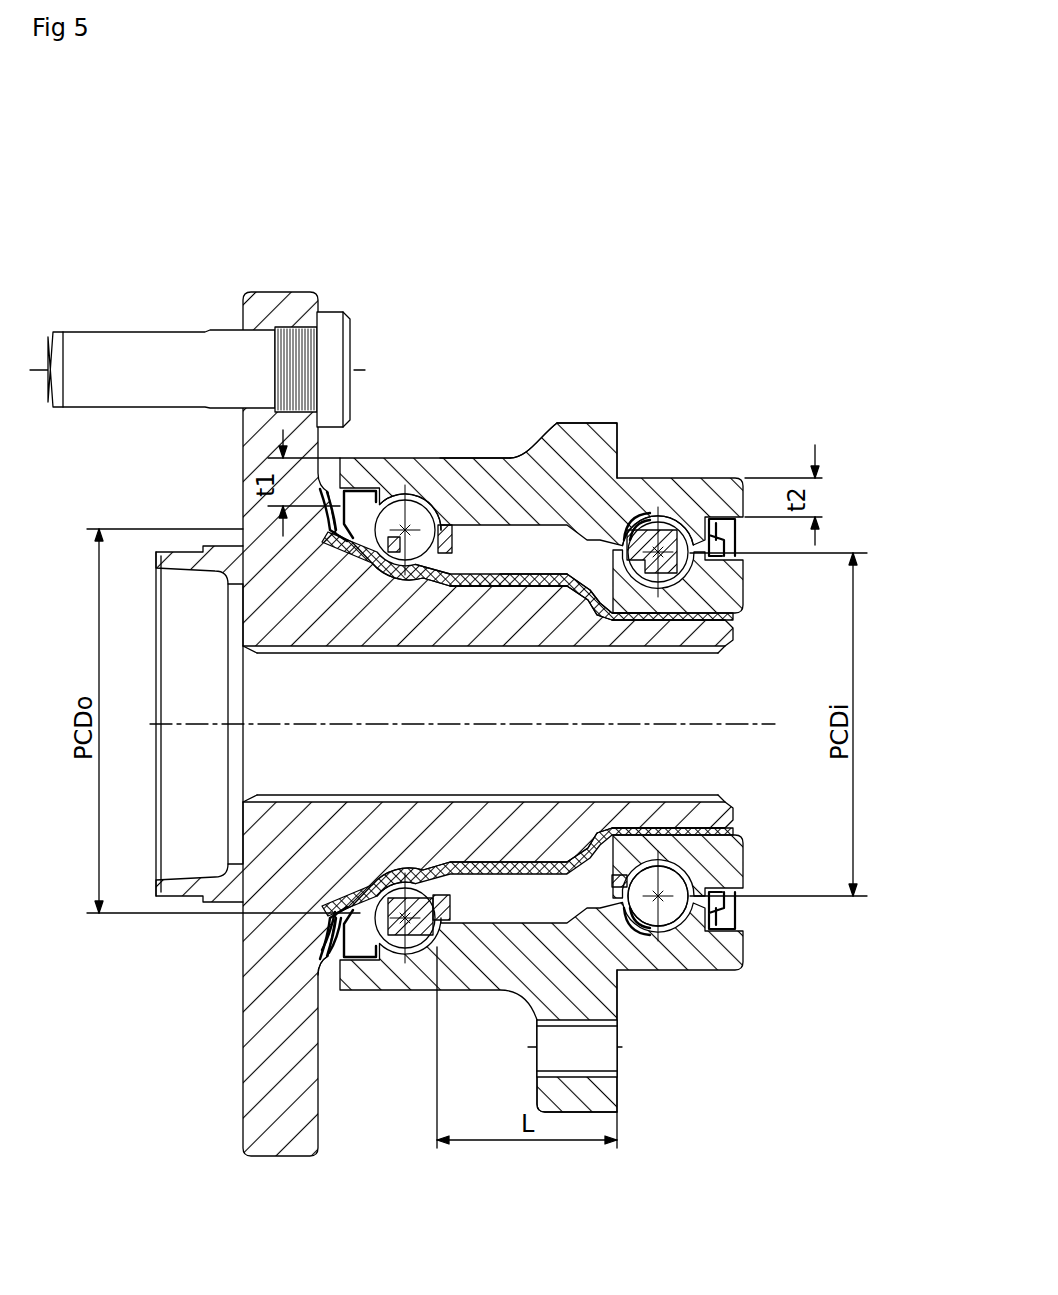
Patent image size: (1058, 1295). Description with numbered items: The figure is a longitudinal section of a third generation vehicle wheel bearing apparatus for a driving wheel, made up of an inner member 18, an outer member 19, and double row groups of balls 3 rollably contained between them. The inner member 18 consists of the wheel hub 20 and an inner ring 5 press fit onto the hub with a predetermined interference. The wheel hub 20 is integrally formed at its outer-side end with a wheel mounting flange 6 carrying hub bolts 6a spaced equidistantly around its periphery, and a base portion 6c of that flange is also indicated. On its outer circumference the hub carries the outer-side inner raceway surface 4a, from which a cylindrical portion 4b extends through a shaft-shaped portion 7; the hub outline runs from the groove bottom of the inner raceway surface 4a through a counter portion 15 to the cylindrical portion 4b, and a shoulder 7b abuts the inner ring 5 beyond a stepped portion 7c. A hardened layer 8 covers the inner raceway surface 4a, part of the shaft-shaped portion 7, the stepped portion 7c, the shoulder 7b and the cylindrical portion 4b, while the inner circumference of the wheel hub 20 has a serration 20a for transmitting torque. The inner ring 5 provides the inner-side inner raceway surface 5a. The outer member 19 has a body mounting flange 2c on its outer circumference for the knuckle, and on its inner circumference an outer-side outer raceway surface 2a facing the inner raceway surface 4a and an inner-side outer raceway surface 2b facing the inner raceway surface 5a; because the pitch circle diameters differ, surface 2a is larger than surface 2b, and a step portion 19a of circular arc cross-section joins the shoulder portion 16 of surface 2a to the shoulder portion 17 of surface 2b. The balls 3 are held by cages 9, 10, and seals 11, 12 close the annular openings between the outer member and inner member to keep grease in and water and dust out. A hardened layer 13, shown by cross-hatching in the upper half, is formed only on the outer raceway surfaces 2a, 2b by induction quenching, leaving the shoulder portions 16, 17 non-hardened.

The outer-side outer raceway surface 2a is at (398, 505).
The inner-side outer raceway surface 2b is at (665, 545).
The body mounting flange 2c is at (542, 1097).
The balls 3 is at (382, 935).
The inner raceway surface 4a is at (392, 895).
The cylindrical portion 4b is at (676, 628).
The inner ring 5 is at (722, 583).
The inner raceway surface 5a is at (738, 539).
The wheel mounting flange 6 is at (272, 297).
The hub bolt 6a is at (136, 350).
The base portion of wheel mounting flange 6c is at (322, 950).
The shaft-shaped portion 7 is at (498, 587).
The shoulder 7b is at (625, 604).
The stepped portion 7c is at (554, 586).
The hardened layer 8 is at (521, 582).
The cage 9 is at (418, 900).
The cage 10 is at (632, 878).
The seal 11 is at (328, 953).
The seal 12 is at (745, 915).
The hardened layer 13 is at (385, 492).
The counter portion 15 is at (452, 566).
The shoulder portion 16 is at (508, 538).
The shoulder portion 17 is at (597, 485).
The inner member 18 is at (232, 641).
The outer member 19 is at (455, 498).
The step portion 19a is at (556, 540).
The wheel hub 20 is at (270, 597).
The serration 20a is at (322, 652).